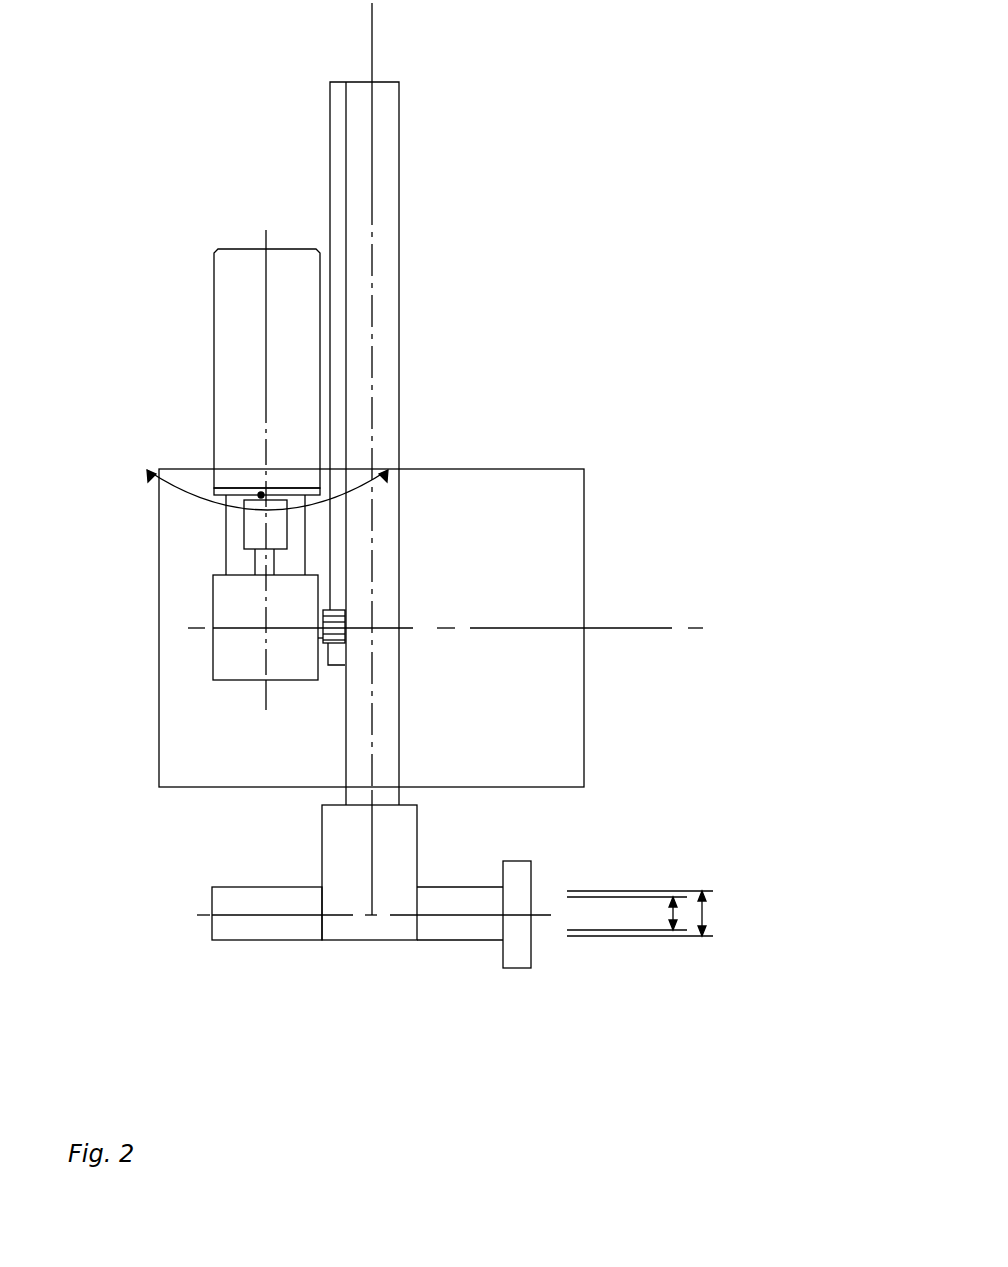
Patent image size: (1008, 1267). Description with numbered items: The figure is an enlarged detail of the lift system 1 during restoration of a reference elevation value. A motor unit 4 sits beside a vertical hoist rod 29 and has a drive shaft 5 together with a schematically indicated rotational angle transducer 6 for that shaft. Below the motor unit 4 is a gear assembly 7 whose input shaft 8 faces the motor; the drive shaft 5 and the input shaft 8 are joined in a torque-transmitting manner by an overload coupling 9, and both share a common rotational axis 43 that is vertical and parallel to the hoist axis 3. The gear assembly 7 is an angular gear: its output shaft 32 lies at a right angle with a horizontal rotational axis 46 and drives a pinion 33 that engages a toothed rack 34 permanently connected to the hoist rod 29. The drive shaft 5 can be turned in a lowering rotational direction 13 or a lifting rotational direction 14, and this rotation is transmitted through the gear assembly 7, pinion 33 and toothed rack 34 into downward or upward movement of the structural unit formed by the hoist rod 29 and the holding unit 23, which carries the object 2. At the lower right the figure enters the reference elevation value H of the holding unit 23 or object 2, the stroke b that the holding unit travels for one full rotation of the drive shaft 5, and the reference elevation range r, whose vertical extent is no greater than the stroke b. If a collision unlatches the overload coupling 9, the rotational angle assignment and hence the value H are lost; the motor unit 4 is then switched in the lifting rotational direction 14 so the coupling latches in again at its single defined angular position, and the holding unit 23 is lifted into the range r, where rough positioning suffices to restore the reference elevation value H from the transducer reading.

The lift system 1 is at (641, 251).
The object 2 is at (457, 928).
The hoist axis 3 is at (373, 45).
The motor unit 4 is at (222, 320).
The drive shaft 5 is at (269, 494).
The rotational angle transducer 6 is at (260, 492).
The gear assembly 7 is at (230, 652).
The input shaft 8 is at (257, 562).
The overload coupling 9 is at (253, 533).
The lowering rotational direction 13 is at (197, 500).
The lifting rotational direction 14 is at (277, 510).
The holding unit 23 is at (400, 852).
The hoist rod 29 is at (392, 272).
The output shaft 32 is at (322, 639).
The pinion 33 is at (337, 641).
The toothed rack 34 is at (340, 367).
The common rotational axis 43 is at (266, 238).
The horizontal rotational axis 46 is at (517, 628).
The reference elevation value H is at (539, 914).
The reference elevation range r is at (666, 911).
The stroke b is at (704, 915).